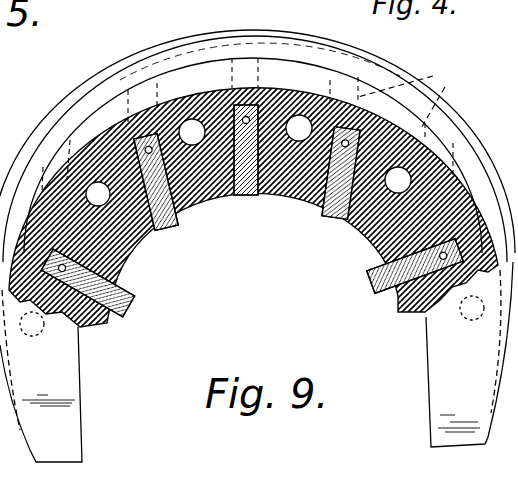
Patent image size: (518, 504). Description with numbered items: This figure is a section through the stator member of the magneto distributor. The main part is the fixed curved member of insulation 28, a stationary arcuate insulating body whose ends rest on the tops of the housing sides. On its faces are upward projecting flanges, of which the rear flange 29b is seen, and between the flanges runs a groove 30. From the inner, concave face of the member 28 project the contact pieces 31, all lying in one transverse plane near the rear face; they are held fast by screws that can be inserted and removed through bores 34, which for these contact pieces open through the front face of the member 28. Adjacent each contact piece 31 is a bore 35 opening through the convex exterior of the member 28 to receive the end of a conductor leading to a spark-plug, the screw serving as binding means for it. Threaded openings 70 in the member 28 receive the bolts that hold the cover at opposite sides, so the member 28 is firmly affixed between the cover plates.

The fixed curved member of insulation 28 is at (301, 185).
The upward projecting flange 29b is at (187, 50).
The groove 30 is at (213, 90).
The contact pieces 31 is at (176, 228).
The bores 34 is at (96, 185).
The bore 35 is at (408, 100).
The threaded openings 70 is at (40, 336).